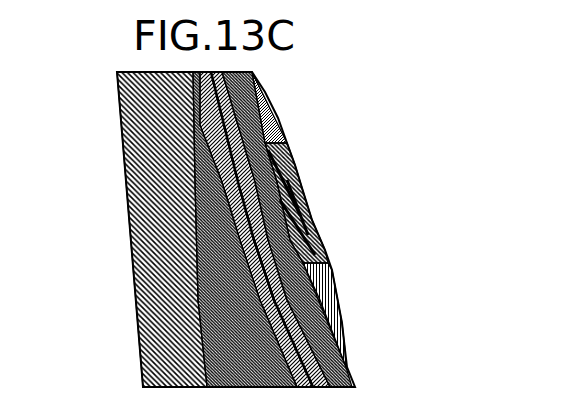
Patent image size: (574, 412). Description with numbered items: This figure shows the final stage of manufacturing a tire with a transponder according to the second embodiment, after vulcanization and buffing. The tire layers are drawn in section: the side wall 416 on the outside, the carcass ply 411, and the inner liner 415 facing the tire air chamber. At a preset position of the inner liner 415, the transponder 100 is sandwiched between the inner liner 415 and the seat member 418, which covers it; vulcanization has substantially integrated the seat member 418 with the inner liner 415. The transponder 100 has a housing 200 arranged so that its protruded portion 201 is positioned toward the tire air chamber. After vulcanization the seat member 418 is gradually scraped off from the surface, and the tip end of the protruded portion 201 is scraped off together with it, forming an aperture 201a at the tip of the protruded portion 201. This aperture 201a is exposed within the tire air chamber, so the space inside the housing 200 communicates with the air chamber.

The transponder 100 is at (318, 232).
The housing 200 is at (292, 164).
The protruded portion 201 is at (303, 185).
The aperture 201a is at (310, 200).
The carcass ply 411 is at (336, 355).
The inner liner 415 is at (325, 322).
The side wall 416 is at (126, 200).
The seat member 418 is at (322, 282).